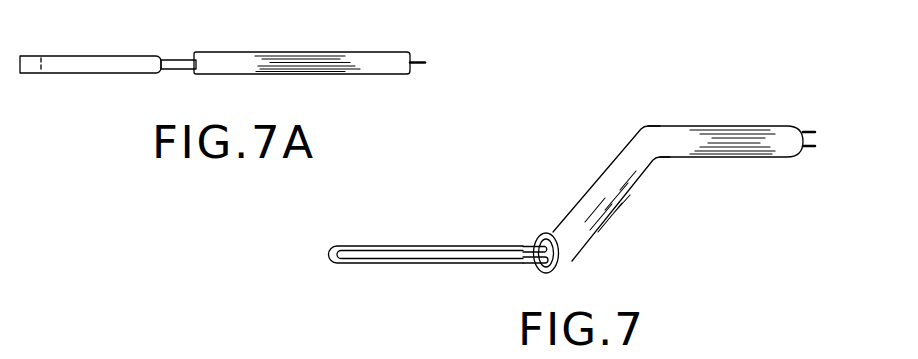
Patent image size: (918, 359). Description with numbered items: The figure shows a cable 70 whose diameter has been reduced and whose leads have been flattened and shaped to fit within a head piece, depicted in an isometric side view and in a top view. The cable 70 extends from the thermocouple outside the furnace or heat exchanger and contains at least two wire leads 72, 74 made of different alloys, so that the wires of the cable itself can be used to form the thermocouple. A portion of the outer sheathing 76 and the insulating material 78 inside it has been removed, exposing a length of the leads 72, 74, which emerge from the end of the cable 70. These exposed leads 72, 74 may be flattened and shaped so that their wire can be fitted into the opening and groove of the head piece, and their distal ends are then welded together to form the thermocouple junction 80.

In FIG. 7A, the cable 70 is at (258, 52).
In FIG. 7, the cable 70 is at (705, 124).
In FIG. 7A, the lead 72 is at (83, 73).
In FIG. 7, the lead 72 is at (427, 245).
In FIG. 7, the lead 74 is at (460, 264).
In FIG. 7, the sheathing 76 is at (605, 175).
In FIG. 7, the insulating material 78 is at (553, 255).
In FIG. 7A, the thermocouple junction 80 is at (43, 62).
In FIG. 7, the thermocouple junction 80 is at (395, 266).